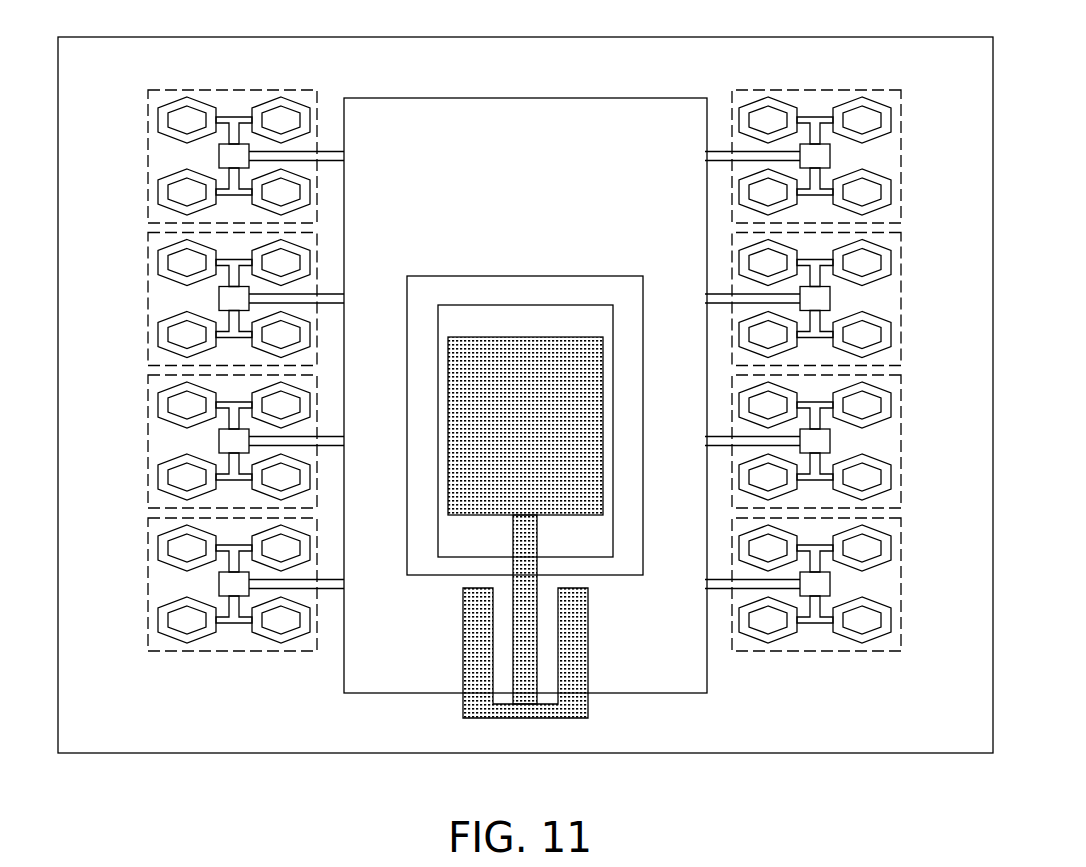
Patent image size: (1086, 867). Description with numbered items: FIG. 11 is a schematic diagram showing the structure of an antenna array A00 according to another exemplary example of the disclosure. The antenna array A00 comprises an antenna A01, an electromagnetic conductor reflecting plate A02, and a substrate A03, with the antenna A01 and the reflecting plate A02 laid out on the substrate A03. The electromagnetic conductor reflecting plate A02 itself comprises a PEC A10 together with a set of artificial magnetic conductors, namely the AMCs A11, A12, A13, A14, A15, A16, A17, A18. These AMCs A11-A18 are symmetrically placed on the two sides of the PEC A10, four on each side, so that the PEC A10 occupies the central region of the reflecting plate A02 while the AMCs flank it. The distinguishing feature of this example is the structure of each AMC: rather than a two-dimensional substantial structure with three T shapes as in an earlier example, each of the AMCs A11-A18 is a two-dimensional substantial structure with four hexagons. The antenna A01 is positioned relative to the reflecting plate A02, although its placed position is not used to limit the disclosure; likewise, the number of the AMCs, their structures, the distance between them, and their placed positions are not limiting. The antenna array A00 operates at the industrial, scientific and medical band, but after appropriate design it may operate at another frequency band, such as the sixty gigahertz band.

The antenna array A00 is at (572, 421).
The antenna A01 is at (462, 707).
The electromagnetic conductor reflecting plate A02 is at (495, 97).
The substrate A03 is at (993, 443).
The PEC A10 is at (378, 127).
The AMC A11 is at (902, 157).
The AMC A12 is at (902, 299).
The AMC A13 is at (902, 442).
The AMC A14 is at (902, 585).
The AMC A15 is at (147, 156).
The AMC A16 is at (147, 298).
The AMC A17 is at (147, 441).
The AMC A18 is at (147, 584).